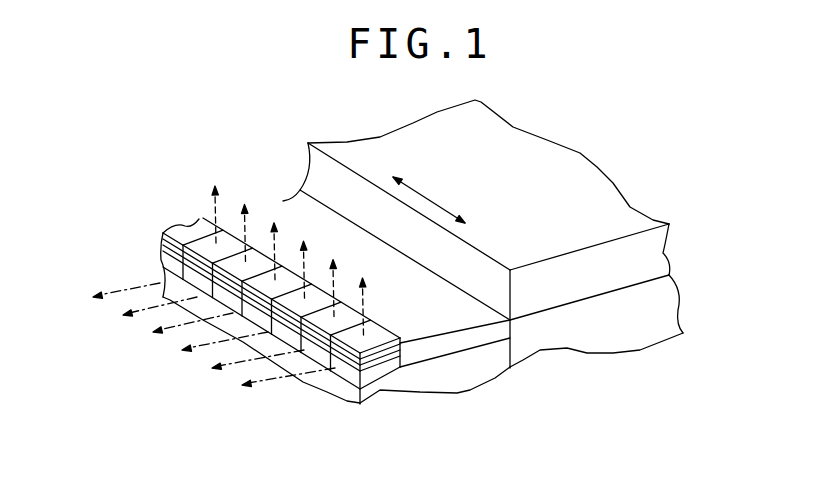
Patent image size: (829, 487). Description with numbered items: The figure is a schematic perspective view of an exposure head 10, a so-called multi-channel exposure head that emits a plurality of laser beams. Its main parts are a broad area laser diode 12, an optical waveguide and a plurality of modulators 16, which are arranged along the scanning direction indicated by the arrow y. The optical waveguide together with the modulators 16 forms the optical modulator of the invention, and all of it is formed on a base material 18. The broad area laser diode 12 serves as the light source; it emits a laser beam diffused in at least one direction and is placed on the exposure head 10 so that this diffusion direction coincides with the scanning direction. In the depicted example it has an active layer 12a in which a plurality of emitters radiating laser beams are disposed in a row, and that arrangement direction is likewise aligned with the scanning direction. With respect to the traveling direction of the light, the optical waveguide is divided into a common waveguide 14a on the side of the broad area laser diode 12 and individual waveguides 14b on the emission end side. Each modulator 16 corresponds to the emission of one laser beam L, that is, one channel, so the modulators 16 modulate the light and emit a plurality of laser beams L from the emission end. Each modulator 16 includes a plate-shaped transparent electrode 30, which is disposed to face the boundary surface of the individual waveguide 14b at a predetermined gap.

The exposure head 10 is at (549, 113).
The broad area laser diode 12 is at (586, 177).
The active layer 12a is at (672, 264).
The common waveguide 14a is at (290, 212).
The individual waveguide 14b is at (168, 264).
The modulator 16 is at (208, 247).
The base material 18 is at (467, 385).
The transparent electrode 30 is at (232, 232).
The laser beam L is at (117, 296).
The arrow y is at (427, 195).